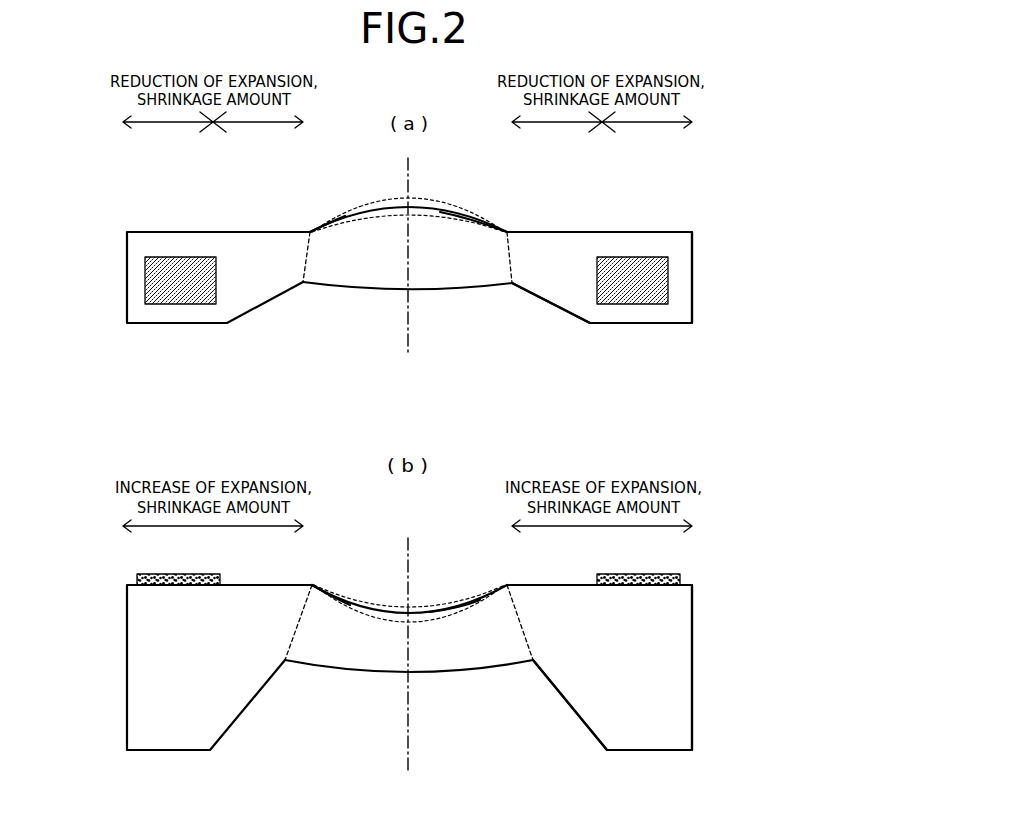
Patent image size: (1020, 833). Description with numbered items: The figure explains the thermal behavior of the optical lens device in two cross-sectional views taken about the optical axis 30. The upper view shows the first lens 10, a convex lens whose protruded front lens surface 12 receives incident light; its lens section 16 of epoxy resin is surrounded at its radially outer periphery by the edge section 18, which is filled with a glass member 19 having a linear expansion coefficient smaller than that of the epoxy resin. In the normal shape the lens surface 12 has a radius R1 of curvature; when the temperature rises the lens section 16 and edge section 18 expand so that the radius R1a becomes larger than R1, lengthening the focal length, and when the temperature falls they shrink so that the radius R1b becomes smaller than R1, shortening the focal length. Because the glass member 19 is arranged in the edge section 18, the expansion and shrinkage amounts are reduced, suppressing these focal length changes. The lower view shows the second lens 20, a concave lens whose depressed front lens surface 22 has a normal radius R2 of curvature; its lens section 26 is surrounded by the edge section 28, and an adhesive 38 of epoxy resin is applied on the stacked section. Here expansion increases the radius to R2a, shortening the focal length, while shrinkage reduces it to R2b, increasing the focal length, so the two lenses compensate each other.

The first lens 10 is at (603, 171).
The lens surface 12 is at (325, 213).
The lens section 16 is at (373, 194).
The edge section 18 is at (663, 247).
The glass member 19 is at (172, 257).
The optical axis 30 is at (410, 323).
The second lens 20 is at (483, 504).
The lens surface 22 is at (350, 595).
The lens section 26 is at (379, 596).
The edge section 28 is at (568, 598).
The adhesive 38 is at (137, 577).
The radius of curvature R1 is at (460, 212).
The radius of curvature R1a is at (477, 217).
The radius of curvature R1b is at (422, 198).
The radius of curvature R2 is at (445, 605).
The radius of curvature R2a is at (422, 607).
The radius of curvature R2b is at (477, 597).